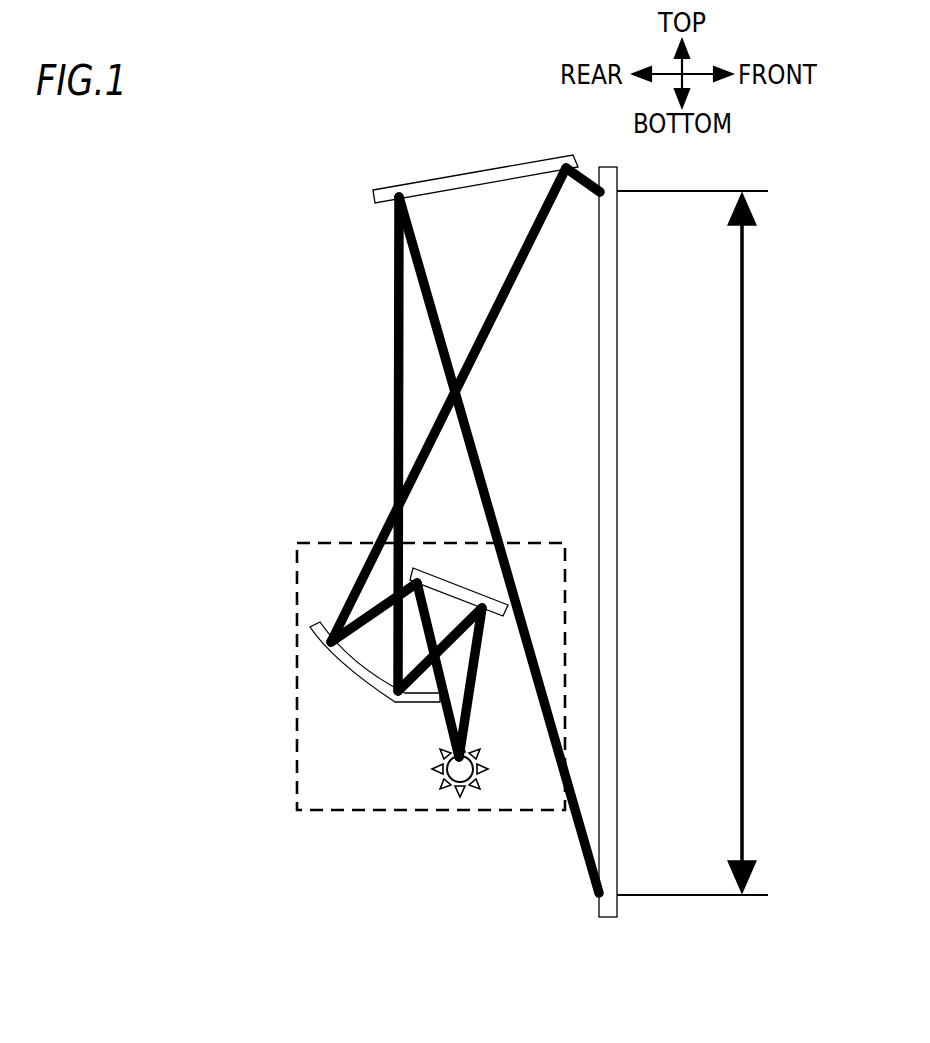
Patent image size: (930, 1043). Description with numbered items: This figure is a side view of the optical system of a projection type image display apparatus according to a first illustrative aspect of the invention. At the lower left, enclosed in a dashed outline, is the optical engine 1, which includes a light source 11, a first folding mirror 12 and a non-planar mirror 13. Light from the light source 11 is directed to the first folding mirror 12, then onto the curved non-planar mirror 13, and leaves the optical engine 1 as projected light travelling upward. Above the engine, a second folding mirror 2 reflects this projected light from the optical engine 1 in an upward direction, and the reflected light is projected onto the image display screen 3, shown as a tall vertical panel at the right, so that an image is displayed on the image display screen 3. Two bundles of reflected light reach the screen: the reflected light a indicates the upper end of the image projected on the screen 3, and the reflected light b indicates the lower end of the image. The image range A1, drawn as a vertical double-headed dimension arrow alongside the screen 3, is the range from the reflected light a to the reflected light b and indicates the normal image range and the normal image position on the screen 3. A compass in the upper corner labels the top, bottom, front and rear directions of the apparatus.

The optical engine 1 is at (297, 774).
The second folding mirror 2 is at (443, 182).
The image display screen 3 is at (617, 643).
The light source 11 is at (437, 780).
The first folding mirror 12 is at (440, 572).
The non-planar mirror 13 is at (347, 667).
The reflected light a is at (601, 195).
The reflected light b is at (588, 835).
The image range A1 is at (701, 543).